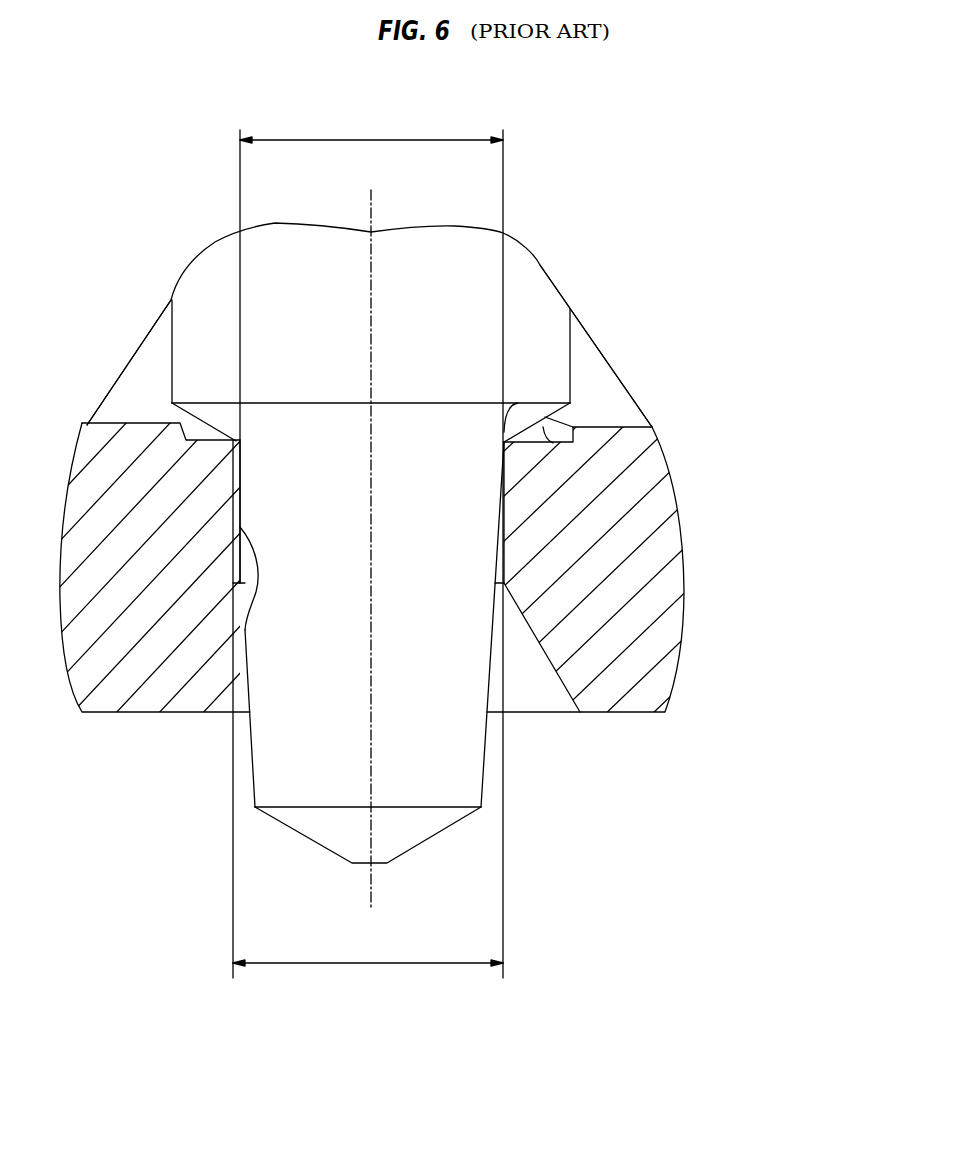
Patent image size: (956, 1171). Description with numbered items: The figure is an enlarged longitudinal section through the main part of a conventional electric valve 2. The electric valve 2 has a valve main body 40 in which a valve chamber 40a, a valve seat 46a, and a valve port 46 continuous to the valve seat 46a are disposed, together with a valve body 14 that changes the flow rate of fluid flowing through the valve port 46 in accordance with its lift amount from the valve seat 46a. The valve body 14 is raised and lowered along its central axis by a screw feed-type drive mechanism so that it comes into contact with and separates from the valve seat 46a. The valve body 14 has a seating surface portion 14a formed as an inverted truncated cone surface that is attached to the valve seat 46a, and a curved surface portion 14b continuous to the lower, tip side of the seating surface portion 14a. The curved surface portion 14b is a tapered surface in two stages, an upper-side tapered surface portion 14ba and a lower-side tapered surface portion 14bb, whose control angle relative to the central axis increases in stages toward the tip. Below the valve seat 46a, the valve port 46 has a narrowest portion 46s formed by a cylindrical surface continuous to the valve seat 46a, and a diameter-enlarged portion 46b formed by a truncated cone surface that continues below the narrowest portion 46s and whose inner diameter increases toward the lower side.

The electric valve 2 is at (820, 148).
The valve body 14 is at (488, 806).
The seating surface portion 14a is at (544, 415).
The curved surface portion 14b is at (394, 683).
The upper-side tapered surface portion 14ba is at (482, 766).
The lower-side tapered surface portion 14bb is at (430, 840).
The valve main body 40 is at (126, 419).
The valve chamber 40a is at (147, 373).
The valve port 46 is at (429, 539).
The valve seat 46a is at (505, 440).
The diameter-enlarged portion 46b is at (550, 662).
The narrowest portion 46s is at (238, 587).